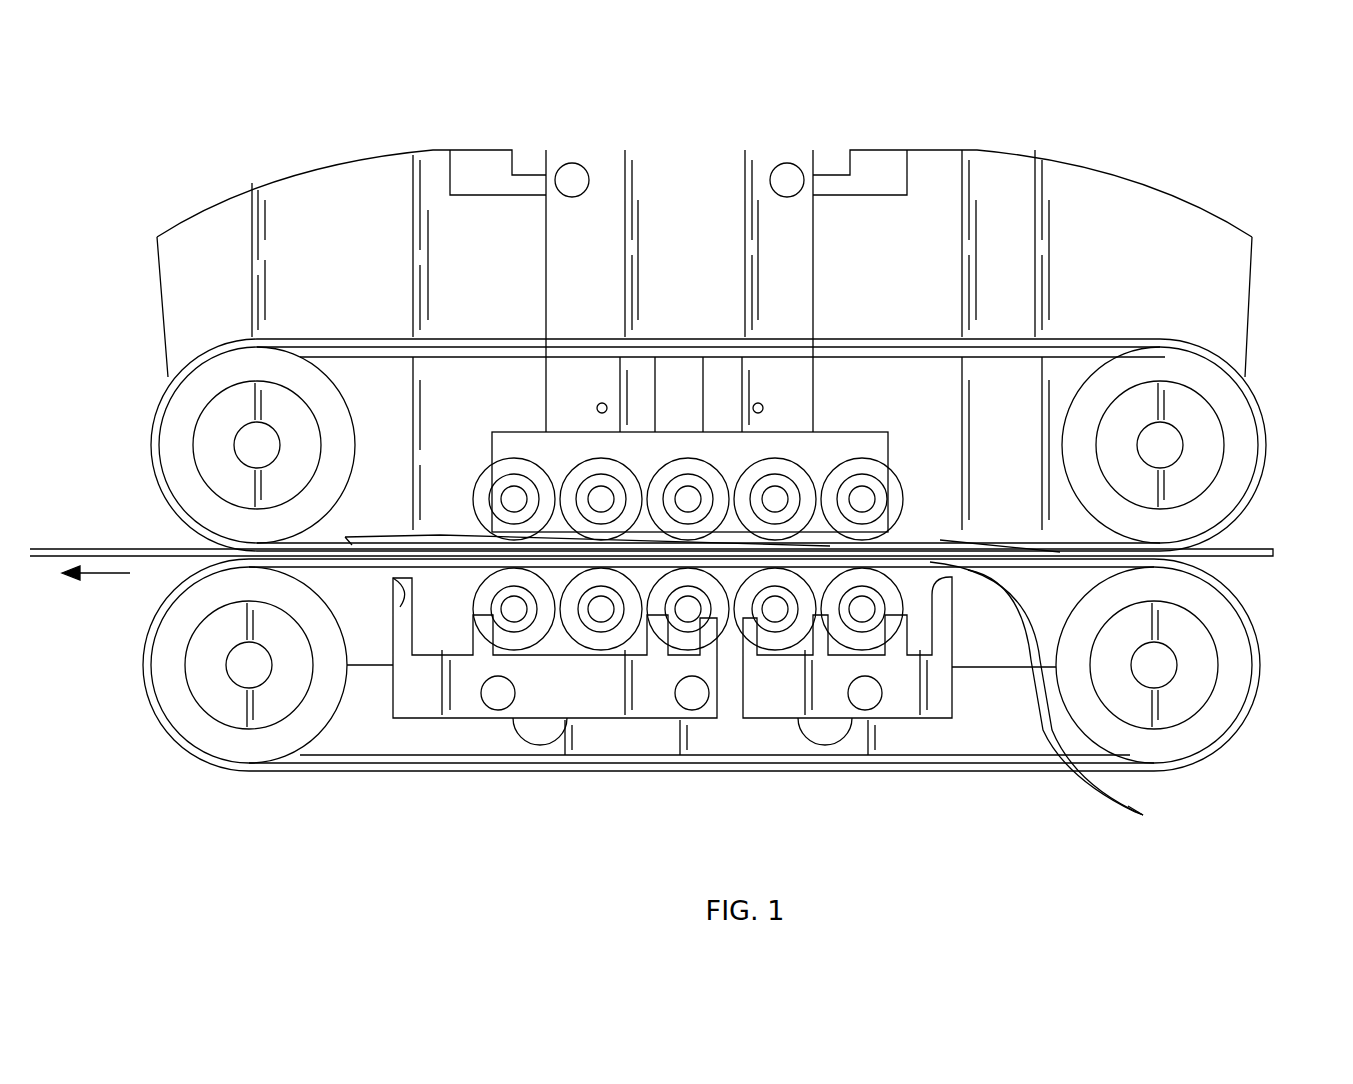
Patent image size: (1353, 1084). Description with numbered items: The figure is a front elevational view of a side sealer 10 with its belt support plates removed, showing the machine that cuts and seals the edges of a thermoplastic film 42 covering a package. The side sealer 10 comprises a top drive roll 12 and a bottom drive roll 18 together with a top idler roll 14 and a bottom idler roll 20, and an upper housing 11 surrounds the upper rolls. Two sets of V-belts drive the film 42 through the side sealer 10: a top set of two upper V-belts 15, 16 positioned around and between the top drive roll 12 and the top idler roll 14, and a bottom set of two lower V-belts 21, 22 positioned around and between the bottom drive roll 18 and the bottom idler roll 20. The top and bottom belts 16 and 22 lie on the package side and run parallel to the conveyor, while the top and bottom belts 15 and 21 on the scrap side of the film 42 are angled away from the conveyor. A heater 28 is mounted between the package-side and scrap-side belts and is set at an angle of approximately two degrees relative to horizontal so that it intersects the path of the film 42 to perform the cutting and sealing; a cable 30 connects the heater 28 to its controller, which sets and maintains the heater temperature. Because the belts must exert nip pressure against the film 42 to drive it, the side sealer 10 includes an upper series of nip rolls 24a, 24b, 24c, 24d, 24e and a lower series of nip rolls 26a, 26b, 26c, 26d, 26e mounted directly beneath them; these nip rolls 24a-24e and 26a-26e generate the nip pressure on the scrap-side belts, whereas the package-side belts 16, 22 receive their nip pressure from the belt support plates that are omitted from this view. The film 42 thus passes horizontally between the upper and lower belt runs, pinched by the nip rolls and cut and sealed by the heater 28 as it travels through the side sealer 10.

The side sealer 10 is at (1125, 112).
The upper housing 11 is at (1172, 205).
The top drive roll 12 is at (175, 447).
The top idler roll 14 is at (1240, 425).
The upper V-belt 15 is at (983, 537).
The upper V-belt 16 is at (1118, 342).
The bottom drive roll 18 is at (165, 683).
The bottom idler roll 20 is at (1240, 672).
The lower V-belt 21 is at (1036, 590).
The lower V-belt 22 is at (1008, 770).
The upper nip roll 24a is at (482, 480).
The upper nip roll 24b is at (570, 473).
The upper nip roll 24c is at (657, 473).
The upper nip roll 24d is at (744, 473).
The upper nip roll 24e is at (831, 473).
The lower nip roll 26a is at (507, 645).
The lower nip roll 26b is at (590, 642).
The lower nip roll 26c is at (683, 645).
The lower nip roll 26d is at (773, 643).
The lower nip roll 26e is at (842, 638).
The heater 28 is at (440, 540).
The cable 30 is at (1143, 815).
The thermoplastic film 42 is at (110, 547).